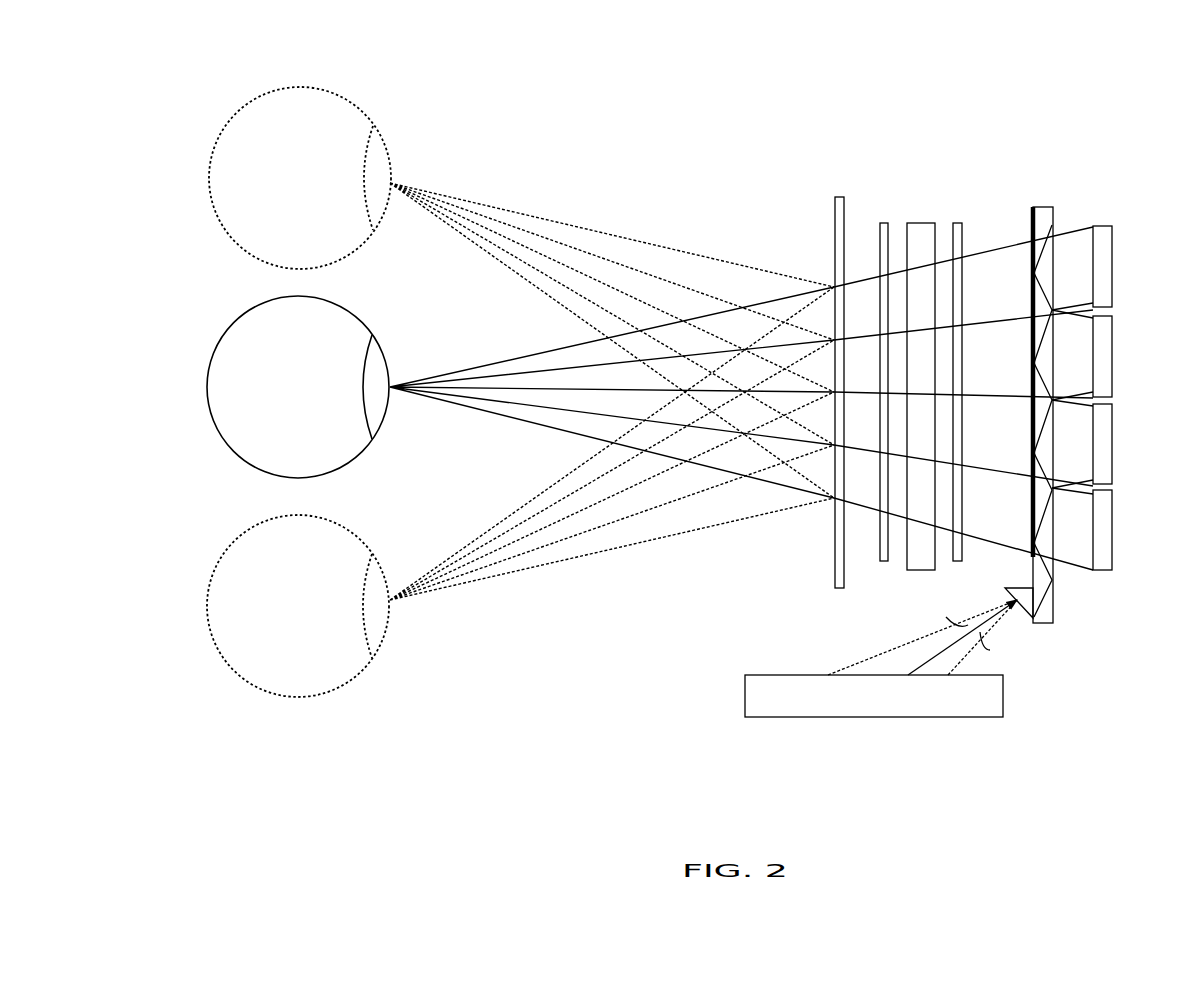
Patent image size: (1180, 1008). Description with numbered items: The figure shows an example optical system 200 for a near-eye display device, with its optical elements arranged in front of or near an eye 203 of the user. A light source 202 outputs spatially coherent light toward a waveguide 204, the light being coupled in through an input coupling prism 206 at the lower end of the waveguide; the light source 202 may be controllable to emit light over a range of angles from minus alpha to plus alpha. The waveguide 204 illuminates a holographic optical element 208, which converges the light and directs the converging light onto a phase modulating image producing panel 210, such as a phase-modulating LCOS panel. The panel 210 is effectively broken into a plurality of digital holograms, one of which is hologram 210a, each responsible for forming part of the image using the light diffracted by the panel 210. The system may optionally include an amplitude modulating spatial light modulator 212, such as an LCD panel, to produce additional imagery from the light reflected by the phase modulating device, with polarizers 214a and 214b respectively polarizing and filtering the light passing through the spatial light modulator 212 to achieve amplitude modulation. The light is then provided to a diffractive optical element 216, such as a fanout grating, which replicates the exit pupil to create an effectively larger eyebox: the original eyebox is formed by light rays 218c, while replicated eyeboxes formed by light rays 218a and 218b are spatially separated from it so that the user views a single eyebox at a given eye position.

The optical system 200 is at (1017, 95).
The light source 202 is at (881, 656).
The eye 203 is at (210, 358).
The waveguide 204 is at (1055, 600).
The input coupling prism 206 is at (1030, 586).
The holographic optical element 208 is at (1030, 228).
The phase modulating image producing panel 210 is at (1128, 369).
The hologram 210a is at (1112, 250).
The amplitude modulating spatial light modulator 212 is at (930, 222).
The polarizer 214a is at (963, 243).
The polarizer 214b is at (879, 238).
The diffractive optical element 216 is at (838, 197).
The light rays 218a is at (532, 205).
The light rays 218b is at (583, 570).
The light rays 218c is at (492, 428).